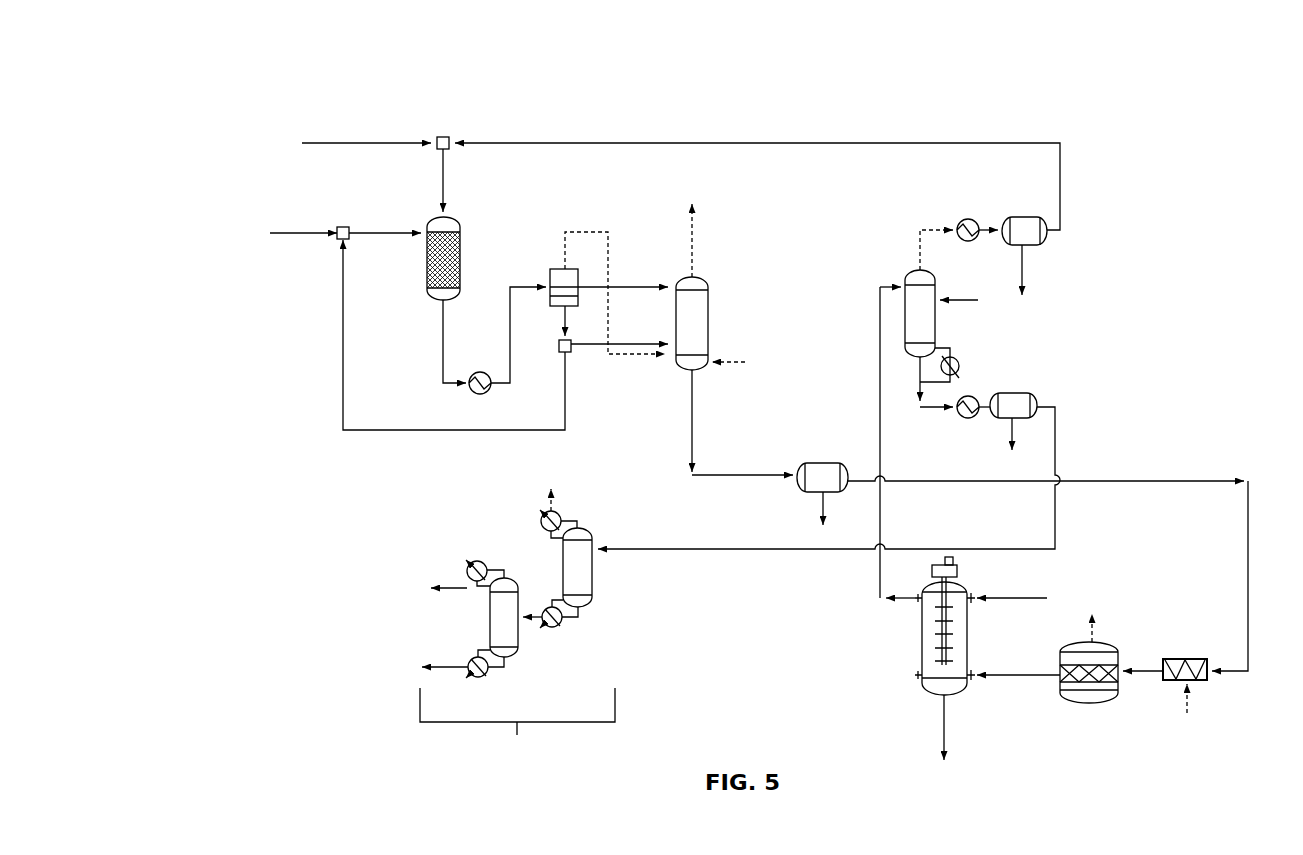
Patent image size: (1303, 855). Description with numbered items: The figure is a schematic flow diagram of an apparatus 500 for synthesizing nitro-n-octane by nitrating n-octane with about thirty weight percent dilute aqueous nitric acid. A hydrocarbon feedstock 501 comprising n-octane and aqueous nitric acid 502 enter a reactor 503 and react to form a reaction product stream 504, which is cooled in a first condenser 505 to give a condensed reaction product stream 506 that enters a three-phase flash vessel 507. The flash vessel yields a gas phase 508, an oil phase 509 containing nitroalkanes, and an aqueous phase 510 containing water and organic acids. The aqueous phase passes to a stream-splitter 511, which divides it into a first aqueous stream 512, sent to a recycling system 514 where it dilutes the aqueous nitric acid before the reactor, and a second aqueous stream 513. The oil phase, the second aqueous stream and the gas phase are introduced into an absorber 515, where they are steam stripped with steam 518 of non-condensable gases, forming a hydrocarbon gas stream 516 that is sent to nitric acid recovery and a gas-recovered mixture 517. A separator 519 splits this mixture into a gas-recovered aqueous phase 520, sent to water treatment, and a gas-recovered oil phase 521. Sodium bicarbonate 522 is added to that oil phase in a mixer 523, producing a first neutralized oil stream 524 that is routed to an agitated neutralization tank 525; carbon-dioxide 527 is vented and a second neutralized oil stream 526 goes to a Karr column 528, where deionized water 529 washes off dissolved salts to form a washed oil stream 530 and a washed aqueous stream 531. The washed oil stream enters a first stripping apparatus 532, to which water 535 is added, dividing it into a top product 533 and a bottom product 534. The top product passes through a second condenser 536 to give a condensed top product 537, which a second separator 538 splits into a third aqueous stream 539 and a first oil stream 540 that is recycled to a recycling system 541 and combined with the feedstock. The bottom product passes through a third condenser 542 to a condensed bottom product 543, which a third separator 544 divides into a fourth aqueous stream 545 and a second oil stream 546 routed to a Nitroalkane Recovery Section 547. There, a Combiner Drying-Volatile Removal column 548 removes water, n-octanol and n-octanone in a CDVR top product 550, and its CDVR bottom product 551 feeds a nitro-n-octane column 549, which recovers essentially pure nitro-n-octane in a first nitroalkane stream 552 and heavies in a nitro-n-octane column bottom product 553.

The apparatus 500 is at (318, 78).
The hydrocarbon feedstock 501 is at (350, 146).
The aqueous nitric acid 502 is at (380, 232).
The reactor 503 is at (452, 232).
The reaction product stream 504 is at (443, 343).
The first condenser 505 is at (476, 397).
The condensed reaction product stream 506 is at (512, 372).
The three-phase flash vessel 507 is at (555, 269).
The gas phase 508 is at (580, 232).
The oil phase 509 is at (585, 285).
The aqueous phase 510 is at (562, 316).
The stream-splitter 511 is at (571, 352).
The first aqueous stream 512 is at (566, 405).
The second aqueous stream 513 is at (610, 350).
The recycling system 514 is at (340, 240).
The absorber 515 is at (684, 278).
The hydrocarbon gas stream 516 is at (694, 240).
The gas-recovered mixture 517 is at (694, 410).
The steam 518 is at (720, 362).
The separator 519 is at (815, 463).
The gas-recovered aqueous phase 520 is at (815, 505).
The gas-recovered oil phase 521 is at (860, 483).
The sodium bicarbonate 522 is at (1190, 703).
The mixer 523 is at (1185, 659).
The first neutralized oil stream 524 is at (1137, 671).
The neutralization tank 525 is at (1075, 642).
The second neutralized oil stream 526 is at (990, 678).
The carbon-dioxide 527 is at (1095, 632).
The Karr column 528 is at (990, 622).
The deionized water 529 is at (1000, 598).
The washed oil stream 530 is at (895, 600).
The washed aqueous stream 531 is at (946, 742).
The first stripping apparatus 532 is at (912, 270).
The top product 533 is at (940, 230).
The bottom product 534 is at (922, 392).
The water 535 is at (955, 300).
The second condenser 536 is at (965, 218).
The condensed top product 537 is at (987, 228).
The second separator 538 is at (1010, 217).
The third aqueous stream 539 is at (1024, 268).
The first oil stream 540 is at (1062, 213).
The recycling system 541 is at (448, 137).
The third condenser 542 is at (960, 418).
The condensed bottom product 543 is at (990, 412).
The third separator 544 is at (1005, 393).
The fourth aqueous stream 545 is at (1014, 436).
The second oil stream 546 is at (1058, 424).
The Nitroalkane Recovery Section 547 is at (517, 725).
The Combiner Drying-Volatile Removal column 548 is at (590, 528).
The nitro-n-octane column 549 is at (516, 578).
The CDVR top product 550 is at (553, 500).
The CDVR bottom product 551 is at (535, 618).
The first nitroalkane stream 552 is at (458, 587).
The nitro-n-octane column bottom product 553 is at (455, 667).